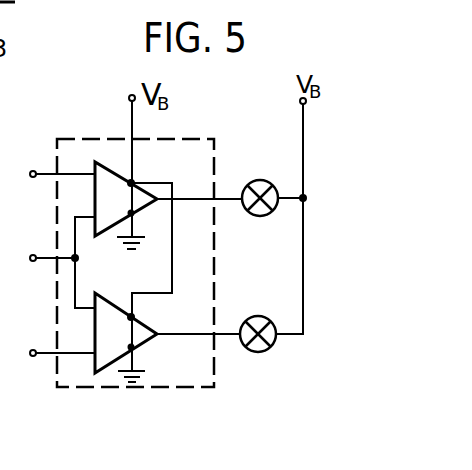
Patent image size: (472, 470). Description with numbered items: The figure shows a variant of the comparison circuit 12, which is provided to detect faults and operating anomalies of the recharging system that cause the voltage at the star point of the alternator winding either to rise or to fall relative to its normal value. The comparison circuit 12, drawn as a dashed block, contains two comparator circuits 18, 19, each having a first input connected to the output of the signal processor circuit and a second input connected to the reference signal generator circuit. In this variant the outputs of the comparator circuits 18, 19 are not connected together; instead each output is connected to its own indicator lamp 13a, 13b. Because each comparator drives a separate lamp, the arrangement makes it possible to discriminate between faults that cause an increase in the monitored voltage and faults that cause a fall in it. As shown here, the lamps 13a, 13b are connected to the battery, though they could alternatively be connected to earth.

The comparison circuit 12 is at (75, 373).
The first comparator circuit 18 is at (109, 184).
The second comparator circuit 19 is at (127, 333).
The first indicator lamp 13a is at (262, 178).
The second indicator lamp 13b is at (263, 343).